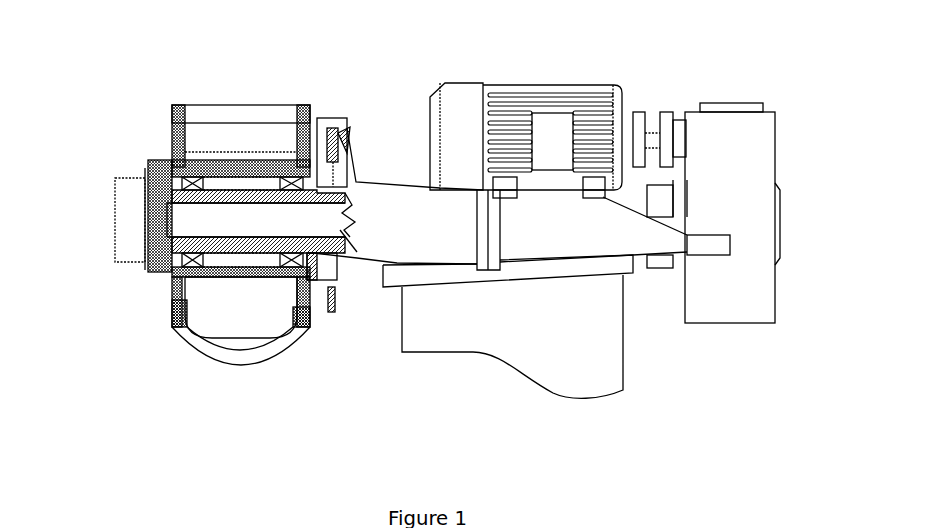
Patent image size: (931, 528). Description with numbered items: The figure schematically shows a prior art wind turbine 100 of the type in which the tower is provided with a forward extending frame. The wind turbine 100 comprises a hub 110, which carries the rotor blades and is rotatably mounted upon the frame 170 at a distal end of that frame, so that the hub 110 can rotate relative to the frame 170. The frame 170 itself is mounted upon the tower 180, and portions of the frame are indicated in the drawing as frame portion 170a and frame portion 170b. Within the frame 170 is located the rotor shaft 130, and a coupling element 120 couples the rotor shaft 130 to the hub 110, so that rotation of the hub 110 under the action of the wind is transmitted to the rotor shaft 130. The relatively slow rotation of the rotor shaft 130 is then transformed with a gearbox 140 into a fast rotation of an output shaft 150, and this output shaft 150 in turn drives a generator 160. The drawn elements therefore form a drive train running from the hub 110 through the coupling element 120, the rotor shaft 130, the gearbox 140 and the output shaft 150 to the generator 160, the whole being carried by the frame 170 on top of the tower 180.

The wind turbine 100 is at (642, 72).
The hub 110 is at (172, 313).
The coupling element 120 is at (157, 218).
The rotor shaft 130 is at (222, 218).
The gearbox 140 is at (753, 165).
The output shaft 150 is at (653, 137).
The generator 160 is at (456, 106).
The frame 170 is at (407, 178).
The frame lower portion 170a is at (381, 232).
The frame base plate 170b is at (547, 207).
The tower 180 is at (635, 340).